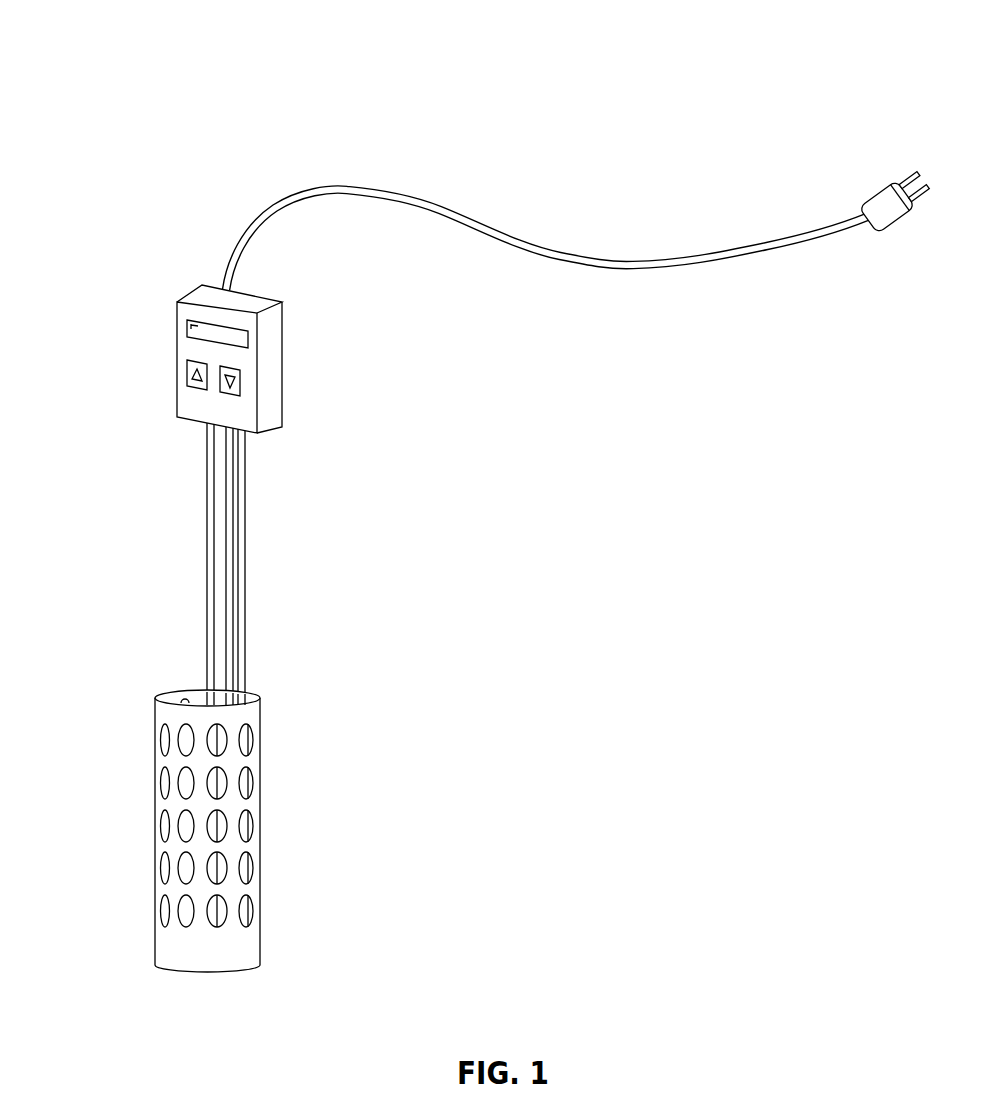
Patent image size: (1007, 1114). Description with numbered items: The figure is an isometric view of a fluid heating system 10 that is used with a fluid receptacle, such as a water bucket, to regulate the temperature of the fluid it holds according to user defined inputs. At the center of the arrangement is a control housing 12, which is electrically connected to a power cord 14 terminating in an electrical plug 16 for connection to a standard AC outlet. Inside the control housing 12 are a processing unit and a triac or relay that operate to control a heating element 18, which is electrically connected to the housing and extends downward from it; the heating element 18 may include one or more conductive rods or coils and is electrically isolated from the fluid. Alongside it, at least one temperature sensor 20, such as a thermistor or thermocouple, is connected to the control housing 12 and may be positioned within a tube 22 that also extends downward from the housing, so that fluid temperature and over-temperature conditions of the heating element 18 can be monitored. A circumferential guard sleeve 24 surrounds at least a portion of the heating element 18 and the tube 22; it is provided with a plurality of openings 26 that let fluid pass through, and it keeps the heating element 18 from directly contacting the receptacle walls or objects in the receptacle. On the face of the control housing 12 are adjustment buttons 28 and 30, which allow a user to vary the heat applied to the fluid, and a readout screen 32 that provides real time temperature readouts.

The fluid heating system 10 is at (112, 50).
The control housing 12 is at (238, 359).
The power cord 14 is at (668, 261).
The electrical plug 16 is at (873, 191).
The heating element 18 is at (228, 564).
The temperature sensor 20 is at (207, 531).
The tube 22 is at (226, 484).
The guard sleeve 24 is at (245, 831).
The openings 26 is at (251, 740).
The adjustment button 28 is at (190, 375).
The adjustment button 30 is at (240, 381).
The readout screen 32 is at (190, 329).